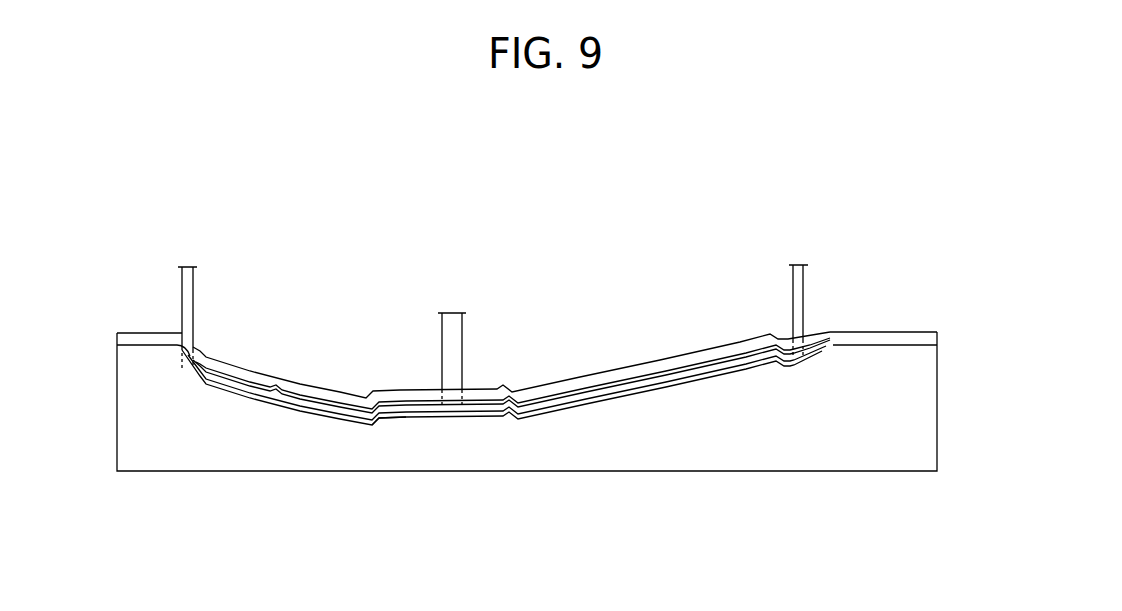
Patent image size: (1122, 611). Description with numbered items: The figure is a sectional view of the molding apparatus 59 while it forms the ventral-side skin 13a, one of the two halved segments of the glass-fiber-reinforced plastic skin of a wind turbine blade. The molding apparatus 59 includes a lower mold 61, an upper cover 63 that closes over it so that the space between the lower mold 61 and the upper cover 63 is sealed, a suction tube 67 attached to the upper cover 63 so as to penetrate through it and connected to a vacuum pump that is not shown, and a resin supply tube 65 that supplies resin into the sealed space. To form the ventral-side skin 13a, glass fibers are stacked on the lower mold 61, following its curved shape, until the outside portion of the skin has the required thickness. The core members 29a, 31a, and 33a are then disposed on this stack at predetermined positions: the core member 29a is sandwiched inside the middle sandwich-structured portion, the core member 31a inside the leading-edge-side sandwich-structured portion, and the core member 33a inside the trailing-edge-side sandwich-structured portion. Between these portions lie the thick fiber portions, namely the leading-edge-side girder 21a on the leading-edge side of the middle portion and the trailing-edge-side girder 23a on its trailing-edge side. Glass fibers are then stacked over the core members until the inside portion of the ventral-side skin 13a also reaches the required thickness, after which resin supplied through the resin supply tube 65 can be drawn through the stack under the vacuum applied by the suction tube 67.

The molding apparatus 59 is at (871, 184).
The lower mold 61 is at (900, 430).
The upper cover 63 is at (897, 336).
The resin supply tube 65 is at (448, 348).
The suction tube 67 is at (193, 293).
The ventral-side skin 13a is at (390, 441).
The leading-edge-side girder 21a is at (323, 410).
The trailing-edge-side girder 23a is at (571, 398).
The core member 29a is at (449, 410).
The core member 31a is at (228, 388).
The core member 33a is at (705, 368).